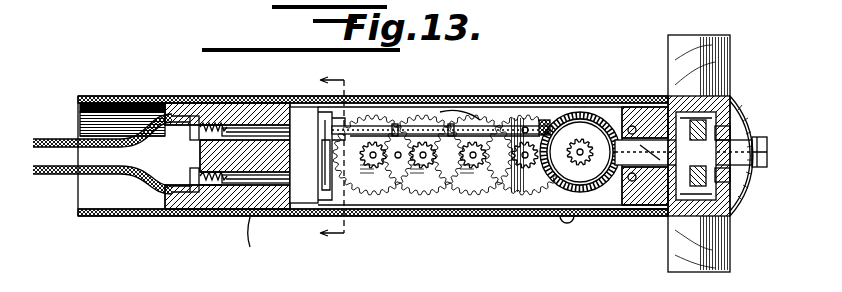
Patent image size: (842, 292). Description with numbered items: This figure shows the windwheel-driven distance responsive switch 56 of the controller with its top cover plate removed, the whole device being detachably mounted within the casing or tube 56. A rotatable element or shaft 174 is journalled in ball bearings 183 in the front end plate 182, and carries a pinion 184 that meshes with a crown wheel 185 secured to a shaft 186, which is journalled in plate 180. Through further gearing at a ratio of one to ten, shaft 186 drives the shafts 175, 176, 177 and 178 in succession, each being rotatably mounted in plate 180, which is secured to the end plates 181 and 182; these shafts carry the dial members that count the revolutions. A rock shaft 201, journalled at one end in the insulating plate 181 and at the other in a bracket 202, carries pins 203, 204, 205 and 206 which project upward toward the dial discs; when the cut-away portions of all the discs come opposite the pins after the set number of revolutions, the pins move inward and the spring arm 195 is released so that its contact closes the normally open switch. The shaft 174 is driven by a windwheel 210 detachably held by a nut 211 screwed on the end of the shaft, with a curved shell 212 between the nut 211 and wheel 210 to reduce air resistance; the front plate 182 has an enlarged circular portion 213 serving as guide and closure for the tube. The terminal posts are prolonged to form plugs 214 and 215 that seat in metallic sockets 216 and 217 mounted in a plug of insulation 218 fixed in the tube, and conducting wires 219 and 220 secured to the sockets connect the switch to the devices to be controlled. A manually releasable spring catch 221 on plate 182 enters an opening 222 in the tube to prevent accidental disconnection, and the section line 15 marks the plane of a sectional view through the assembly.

The section line 15- 15 is at (338, 156).
The tube 56 is at (447, 216).
The rotatable element 174 is at (722, 176).
The shaft 175 is at (522, 155).
The shaft 176 is at (470, 155).
The shaft 177 is at (428, 162).
The shaft 178 is at (385, 160).
The plate 180 is at (453, 112).
The end plate 181 is at (300, 202).
The end plate 182 is at (641, 198).
The ball bearings 183 is at (733, 104).
The pinion 184 is at (612, 150).
The crown wheel 185 is at (590, 128).
The shaft 186 is at (583, 144).
The spring arm 195 is at (314, 110).
The rock shaft 201 is at (383, 132).
The bracket 202 is at (541, 120).
The pin 203 is at (523, 128).
The pin 204 is at (472, 132).
The pin 205 is at (404, 155).
The pin 206 is at (440, 143).
The windwheel 210 is at (732, 253).
The nut 211 is at (768, 166).
The curved shell 212 is at (753, 119).
The enlarged circular portion 213 is at (667, 110).
The plug 214 is at (257, 128).
The plug 215 is at (262, 247).
The metallic socket 216 is at (230, 130).
The metallic socket 217 is at (222, 194).
The plug of insulation 218 is at (169, 217).
The conducting wire 219 is at (60, 140).
The conducting wire 220 is at (60, 178).
The spring catch 221 is at (602, 212).
The opening 222 is at (560, 220).